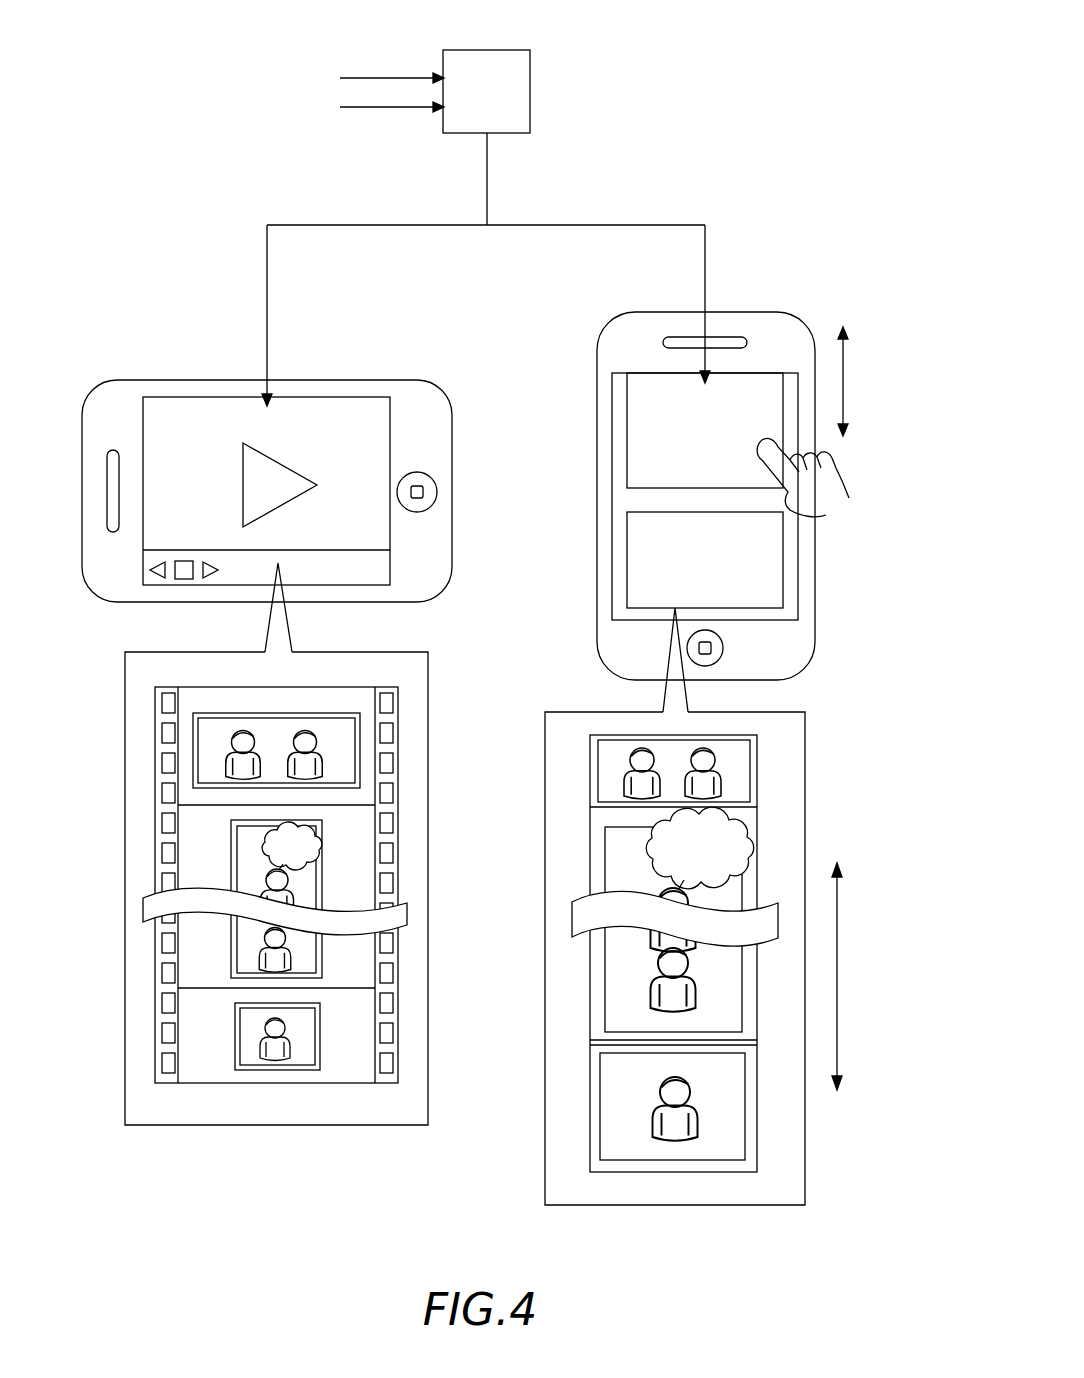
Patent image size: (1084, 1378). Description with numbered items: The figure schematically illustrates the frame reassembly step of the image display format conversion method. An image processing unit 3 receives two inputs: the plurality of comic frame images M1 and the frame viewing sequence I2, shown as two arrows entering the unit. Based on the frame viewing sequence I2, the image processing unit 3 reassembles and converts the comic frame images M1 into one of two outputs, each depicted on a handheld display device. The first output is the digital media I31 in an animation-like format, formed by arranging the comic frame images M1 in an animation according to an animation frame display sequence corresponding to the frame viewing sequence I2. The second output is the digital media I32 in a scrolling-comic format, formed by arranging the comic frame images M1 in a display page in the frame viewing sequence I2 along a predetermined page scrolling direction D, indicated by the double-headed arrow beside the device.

The comic frame images M1 is at (383, 78).
The frame viewing sequence I2 is at (382, 107).
The image processing unit 3 is at (486, 91).
The digital media in animation-like format I31 is at (330, 418).
The digital media in scrolling-comic format I32 is at (757, 390).
The page scrolling direction D is at (846, 380).